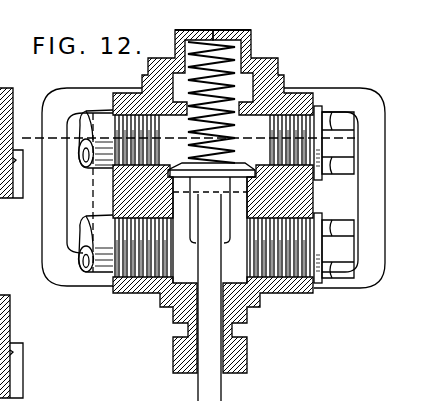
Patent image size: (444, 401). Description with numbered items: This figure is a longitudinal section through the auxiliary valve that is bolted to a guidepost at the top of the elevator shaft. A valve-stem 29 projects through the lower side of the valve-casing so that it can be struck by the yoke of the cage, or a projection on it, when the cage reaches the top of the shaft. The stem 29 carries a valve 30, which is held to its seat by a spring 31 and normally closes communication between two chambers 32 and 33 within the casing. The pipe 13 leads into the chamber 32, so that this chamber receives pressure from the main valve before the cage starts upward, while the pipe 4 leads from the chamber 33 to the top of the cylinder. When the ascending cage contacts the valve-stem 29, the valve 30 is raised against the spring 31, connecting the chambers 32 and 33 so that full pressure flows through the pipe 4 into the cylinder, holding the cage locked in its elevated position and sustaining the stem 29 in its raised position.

The pipe 13 is at (97, 115).
The branch pipe 4 is at (100, 268).
The valve-stem 29 is at (224, 395).
The valve 30 is at (241, 172).
The spring 31 is at (232, 63).
The chamber 32 is at (213, 96).
The chamber 33 is at (210, 230).